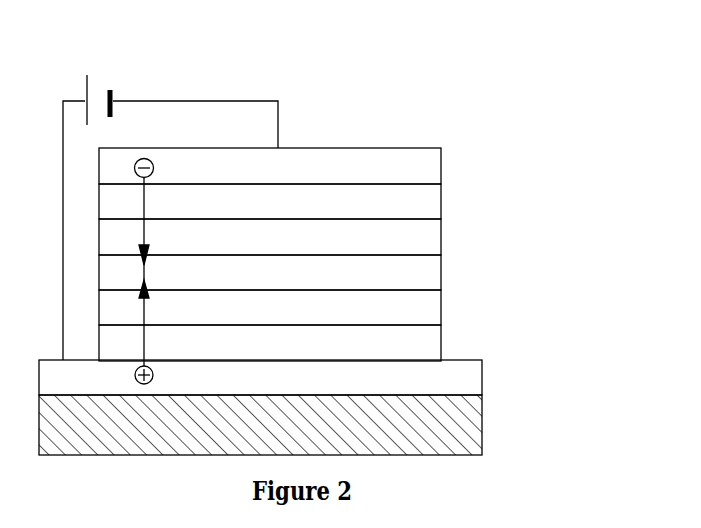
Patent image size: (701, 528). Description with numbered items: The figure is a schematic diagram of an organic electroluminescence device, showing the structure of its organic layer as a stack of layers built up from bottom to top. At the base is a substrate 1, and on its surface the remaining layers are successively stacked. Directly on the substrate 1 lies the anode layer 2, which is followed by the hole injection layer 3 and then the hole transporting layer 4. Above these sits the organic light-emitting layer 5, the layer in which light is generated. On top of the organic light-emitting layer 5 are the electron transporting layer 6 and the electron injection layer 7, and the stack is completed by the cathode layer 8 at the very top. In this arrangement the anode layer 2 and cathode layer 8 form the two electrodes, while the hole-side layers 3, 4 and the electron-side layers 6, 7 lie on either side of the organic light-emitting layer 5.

The substrate 1 is at (470, 428).
The anode layer 2 is at (468, 378).
The hole injection layer 3 is at (408, 345).
The hole transporting layer 4 is at (408, 310).
The organic light-emitting layer 5 is at (408, 269).
The electron transporting layer 6 is at (408, 236).
The electron injection layer 7 is at (408, 206).
The cathode layer 8 is at (408, 166).